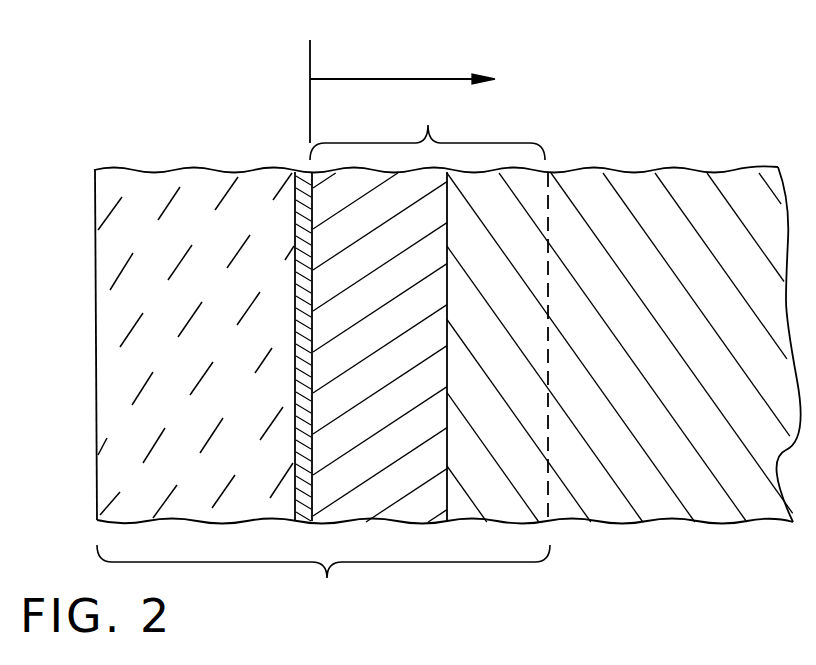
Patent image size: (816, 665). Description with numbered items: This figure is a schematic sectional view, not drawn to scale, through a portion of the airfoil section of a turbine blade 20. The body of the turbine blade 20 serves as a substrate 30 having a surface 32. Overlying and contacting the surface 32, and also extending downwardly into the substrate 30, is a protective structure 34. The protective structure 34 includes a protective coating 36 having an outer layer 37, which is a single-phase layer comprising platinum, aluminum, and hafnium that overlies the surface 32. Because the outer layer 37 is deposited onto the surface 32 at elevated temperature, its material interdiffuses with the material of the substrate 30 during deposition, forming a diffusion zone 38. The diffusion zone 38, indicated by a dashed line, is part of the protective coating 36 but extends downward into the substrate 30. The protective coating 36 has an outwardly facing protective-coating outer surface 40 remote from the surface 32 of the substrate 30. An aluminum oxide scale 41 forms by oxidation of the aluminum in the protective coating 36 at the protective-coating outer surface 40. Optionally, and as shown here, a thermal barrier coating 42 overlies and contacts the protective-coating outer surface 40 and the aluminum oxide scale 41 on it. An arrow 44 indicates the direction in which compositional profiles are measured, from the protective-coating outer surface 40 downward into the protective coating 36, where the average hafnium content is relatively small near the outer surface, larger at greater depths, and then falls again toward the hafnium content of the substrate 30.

The turbine blade 20 is at (708, 78).
The substrate 30 is at (728, 178).
The surface 32 is at (433, 518).
The protective structure 34 is at (327, 578).
The protective coating 36 is at (428, 124).
The outer layer 37 is at (347, 508).
The diffusion zone 38 is at (508, 500).
The protective-coating outer surface 40 is at (313, 224).
The aluminum oxide scale 41 is at (297, 400).
The thermal barrier coating 42 is at (130, 185).
The arrow 44 is at (385, 79).